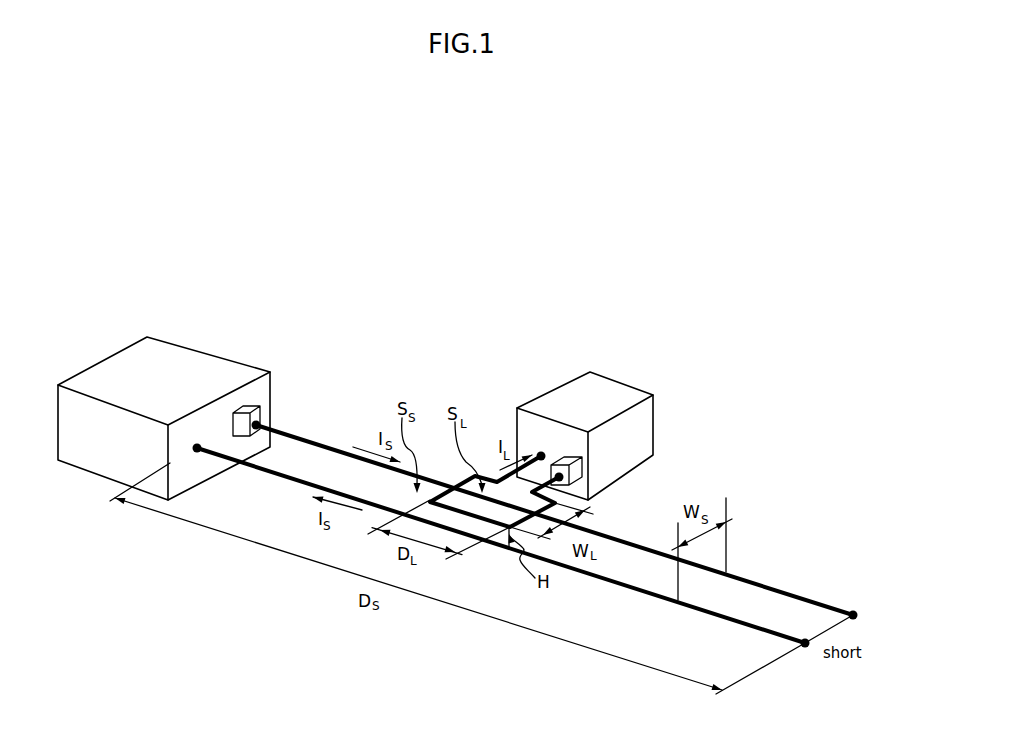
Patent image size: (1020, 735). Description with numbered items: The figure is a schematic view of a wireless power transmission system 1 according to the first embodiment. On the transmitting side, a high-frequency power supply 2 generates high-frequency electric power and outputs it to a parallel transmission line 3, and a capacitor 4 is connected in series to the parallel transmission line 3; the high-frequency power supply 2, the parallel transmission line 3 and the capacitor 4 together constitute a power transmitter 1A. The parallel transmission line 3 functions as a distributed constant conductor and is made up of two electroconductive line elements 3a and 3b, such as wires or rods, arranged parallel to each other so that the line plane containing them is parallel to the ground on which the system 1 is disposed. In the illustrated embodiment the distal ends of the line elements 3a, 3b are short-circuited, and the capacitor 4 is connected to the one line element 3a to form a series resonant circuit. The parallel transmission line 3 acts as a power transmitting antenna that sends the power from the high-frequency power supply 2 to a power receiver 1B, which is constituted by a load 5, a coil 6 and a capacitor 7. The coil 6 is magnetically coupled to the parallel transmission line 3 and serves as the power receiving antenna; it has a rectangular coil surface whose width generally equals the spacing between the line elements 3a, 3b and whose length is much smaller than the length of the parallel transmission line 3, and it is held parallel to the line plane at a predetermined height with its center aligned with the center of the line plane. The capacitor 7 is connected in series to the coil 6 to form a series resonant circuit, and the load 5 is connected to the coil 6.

The wireless power transmission system 1 is at (660, 322).
The power transmitter 1A is at (368, 323).
The power receiver 1B is at (590, 320).
The high-frequency power supply 2 is at (227, 367).
The parallel transmission line 3 is at (397, 358).
The line element 3a is at (347, 452).
The line element 3b is at (312, 482).
The capacitor 4 is at (250, 406).
The load 5 is at (572, 393).
The coil 6 is at (493, 478).
The capacitor 7 is at (567, 458).